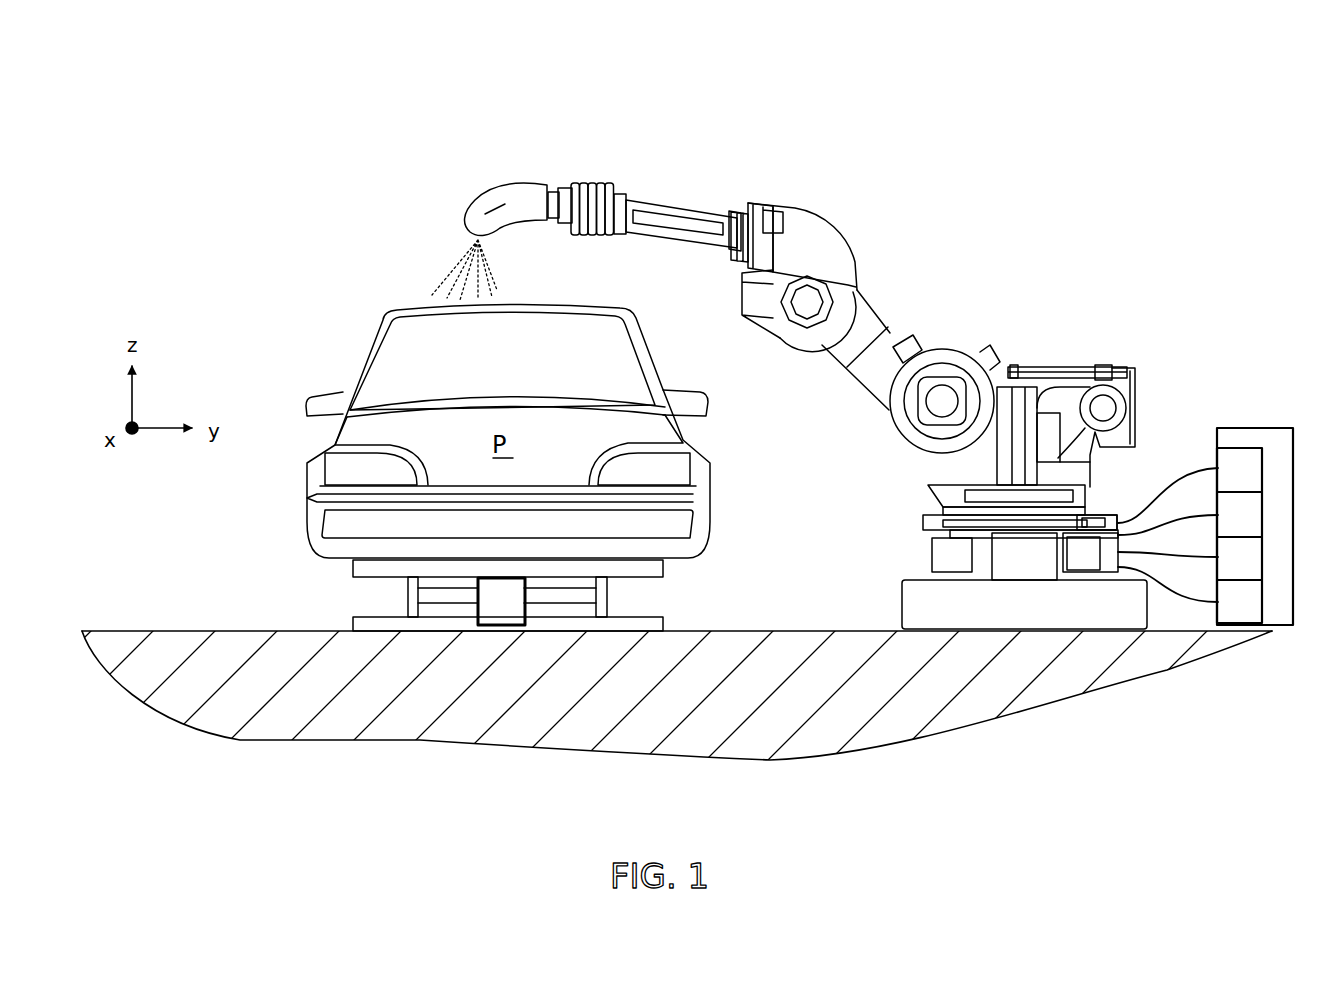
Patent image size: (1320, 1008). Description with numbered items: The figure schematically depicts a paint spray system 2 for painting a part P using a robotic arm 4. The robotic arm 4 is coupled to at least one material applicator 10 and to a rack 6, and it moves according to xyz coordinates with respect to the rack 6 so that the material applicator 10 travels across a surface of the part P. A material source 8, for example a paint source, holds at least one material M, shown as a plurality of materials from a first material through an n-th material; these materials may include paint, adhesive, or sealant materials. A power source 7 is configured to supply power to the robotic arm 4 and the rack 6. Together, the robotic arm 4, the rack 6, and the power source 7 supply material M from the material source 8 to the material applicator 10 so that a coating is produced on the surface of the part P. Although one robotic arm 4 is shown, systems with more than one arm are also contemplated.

The paint spray system 2 is at (462, 108).
The material applicator 10 is at (476, 203).
The robotic arm 4 is at (846, 235).
The power source 7 is at (1045, 400).
The rack 6 is at (1090, 485).
The material source 8 is at (1266, 428).